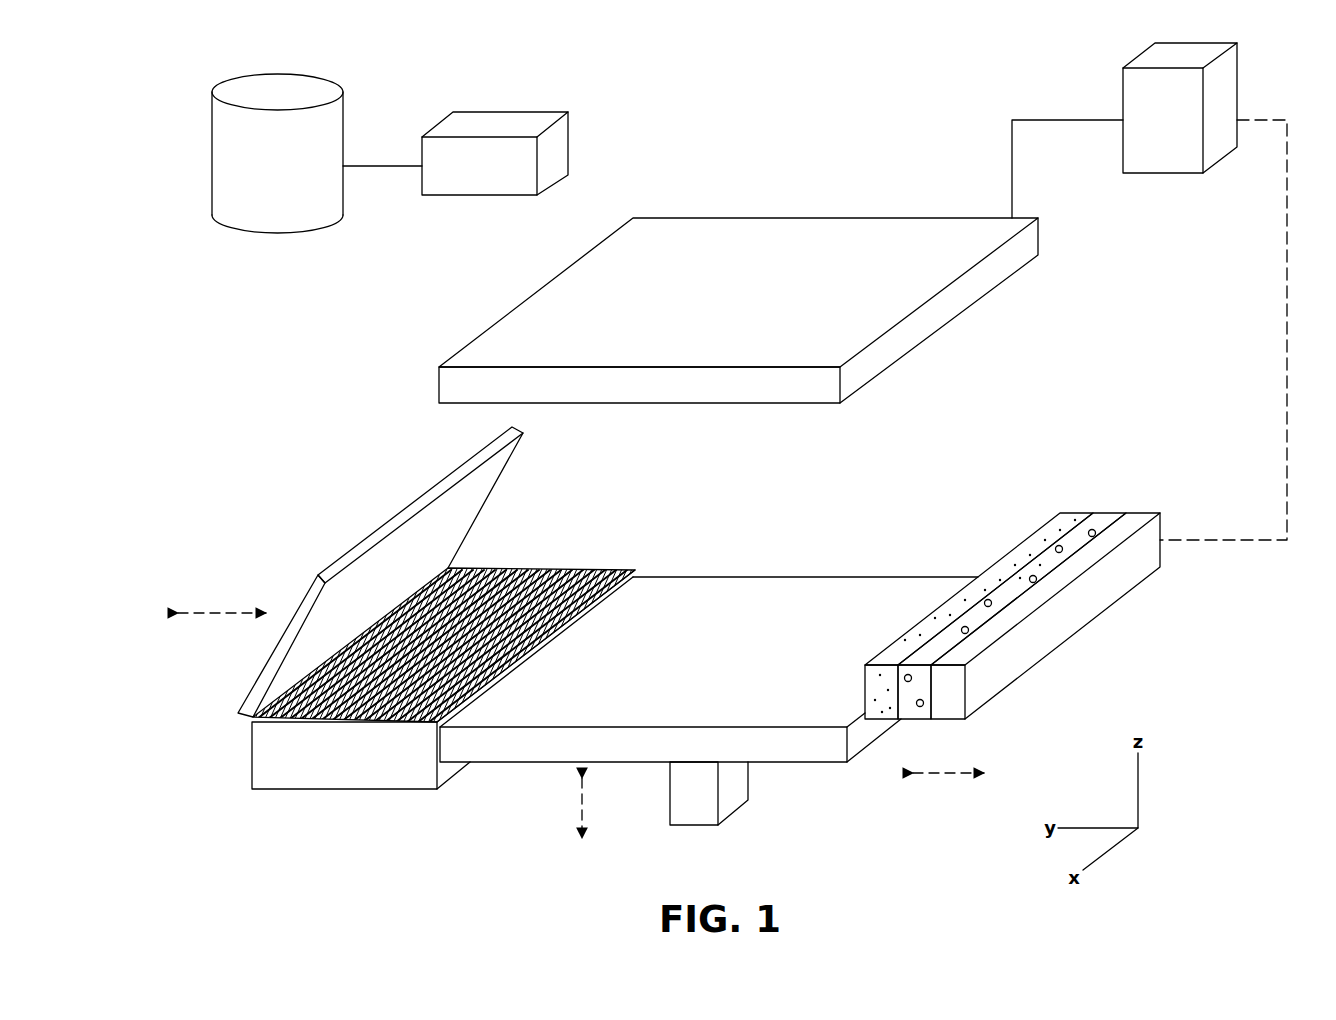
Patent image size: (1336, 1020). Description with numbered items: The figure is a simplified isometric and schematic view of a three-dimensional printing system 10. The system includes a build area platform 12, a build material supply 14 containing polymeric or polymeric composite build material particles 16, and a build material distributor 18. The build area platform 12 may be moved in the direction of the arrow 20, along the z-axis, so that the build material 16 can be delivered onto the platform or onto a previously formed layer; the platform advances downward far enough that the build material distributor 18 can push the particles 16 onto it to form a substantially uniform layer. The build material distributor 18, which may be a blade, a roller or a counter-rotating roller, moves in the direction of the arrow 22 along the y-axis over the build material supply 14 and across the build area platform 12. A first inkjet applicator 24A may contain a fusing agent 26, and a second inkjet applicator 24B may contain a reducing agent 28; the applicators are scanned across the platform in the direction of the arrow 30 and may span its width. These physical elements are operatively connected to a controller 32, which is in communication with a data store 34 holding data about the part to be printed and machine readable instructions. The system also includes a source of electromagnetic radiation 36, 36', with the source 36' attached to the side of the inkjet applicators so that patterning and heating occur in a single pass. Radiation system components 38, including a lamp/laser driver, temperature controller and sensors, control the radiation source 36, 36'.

The 3D printing system 10 is at (188, 151).
The build area platform 12 is at (802, 762).
The build material supply 14 is at (343, 789).
The polymeric or polymeric composite build material particles 16 is at (273, 723).
The build material distributor 18 is at (370, 532).
The arrow 20 is at (582, 797).
The arrow 22 is at (210, 612).
The first inkjet applicator 24A is at (1075, 513).
The second inkjet applicator 24B is at (1108, 513).
The fusing agent 26 is at (1010, 563).
The reducing agent 28 is at (916, 710).
The arrow 30 is at (948, 776).
The controller 32 is at (343, 115).
The data store 34 is at (503, 112).
The source of electromagnetic radiation 36 is at (738, 260).
The source of electromagnetic radiation 36' is at (1050, 567).
The radiation system components 38 is at (1160, 137).